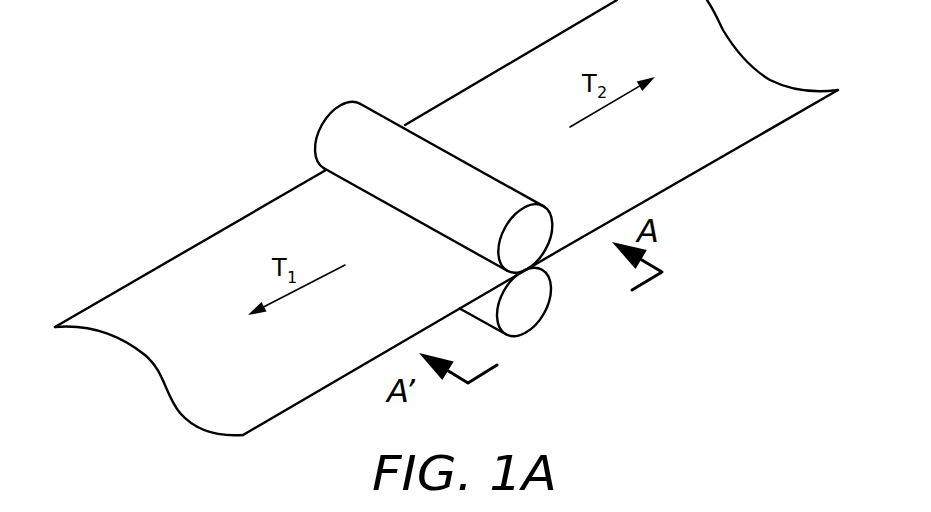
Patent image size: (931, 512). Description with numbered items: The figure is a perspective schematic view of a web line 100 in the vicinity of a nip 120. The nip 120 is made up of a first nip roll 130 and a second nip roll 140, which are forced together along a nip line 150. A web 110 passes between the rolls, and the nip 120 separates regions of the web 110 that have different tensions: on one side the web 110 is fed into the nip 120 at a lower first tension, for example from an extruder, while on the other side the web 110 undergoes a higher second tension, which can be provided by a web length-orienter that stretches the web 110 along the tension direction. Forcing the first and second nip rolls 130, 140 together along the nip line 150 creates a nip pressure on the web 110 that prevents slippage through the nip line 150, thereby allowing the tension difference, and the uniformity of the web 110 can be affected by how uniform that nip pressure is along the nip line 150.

The web line 100 is at (193, 86).
The web 110 is at (178, 255).
The nip 120 is at (325, 90).
The first nip roll 130 is at (317, 138).
The second nip roll 140 is at (529, 333).
The nip line 150 is at (548, 298).